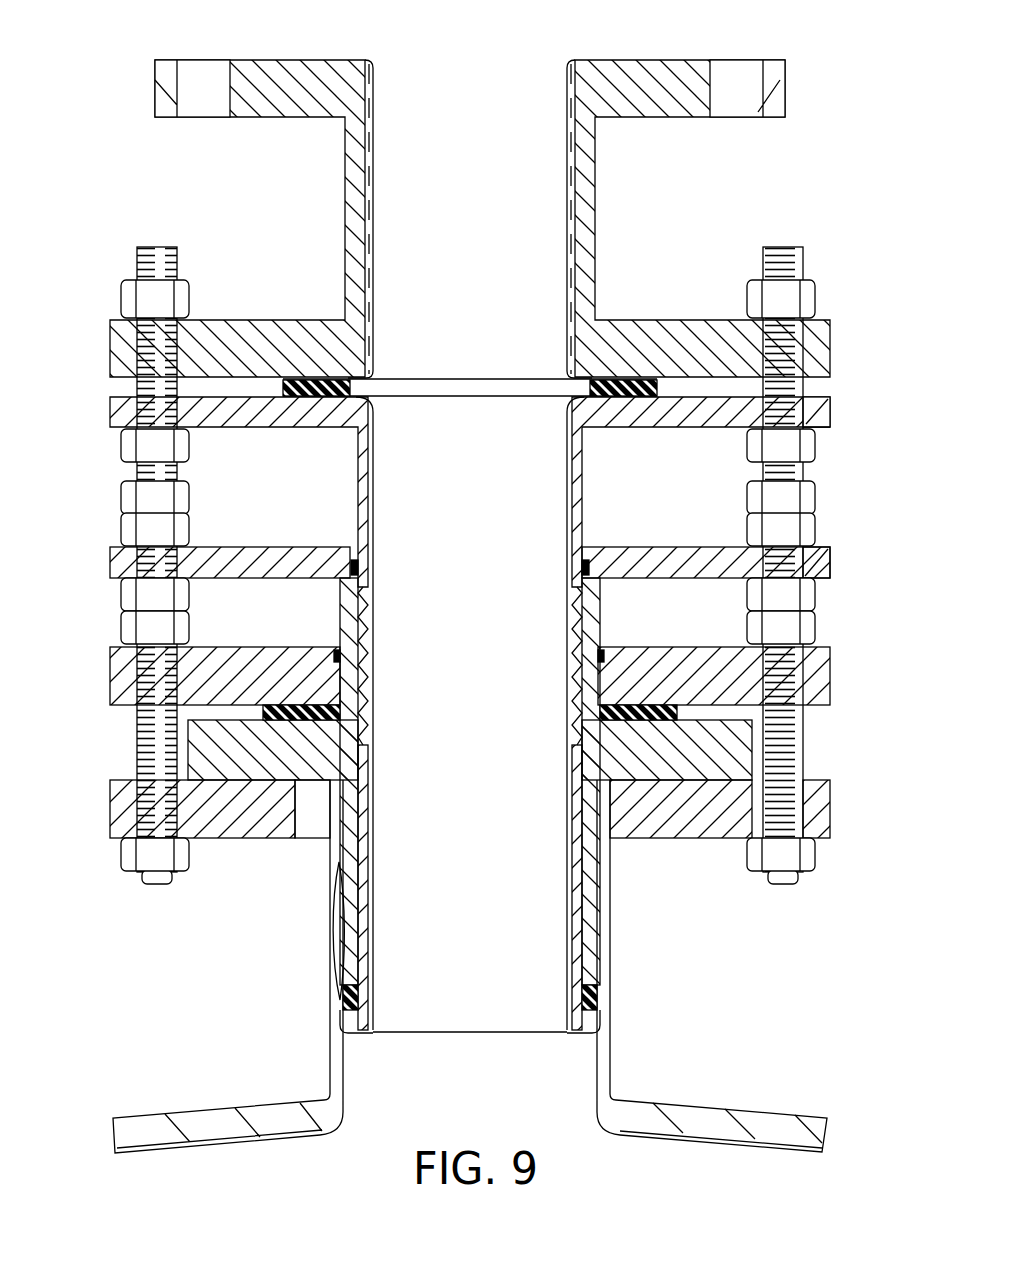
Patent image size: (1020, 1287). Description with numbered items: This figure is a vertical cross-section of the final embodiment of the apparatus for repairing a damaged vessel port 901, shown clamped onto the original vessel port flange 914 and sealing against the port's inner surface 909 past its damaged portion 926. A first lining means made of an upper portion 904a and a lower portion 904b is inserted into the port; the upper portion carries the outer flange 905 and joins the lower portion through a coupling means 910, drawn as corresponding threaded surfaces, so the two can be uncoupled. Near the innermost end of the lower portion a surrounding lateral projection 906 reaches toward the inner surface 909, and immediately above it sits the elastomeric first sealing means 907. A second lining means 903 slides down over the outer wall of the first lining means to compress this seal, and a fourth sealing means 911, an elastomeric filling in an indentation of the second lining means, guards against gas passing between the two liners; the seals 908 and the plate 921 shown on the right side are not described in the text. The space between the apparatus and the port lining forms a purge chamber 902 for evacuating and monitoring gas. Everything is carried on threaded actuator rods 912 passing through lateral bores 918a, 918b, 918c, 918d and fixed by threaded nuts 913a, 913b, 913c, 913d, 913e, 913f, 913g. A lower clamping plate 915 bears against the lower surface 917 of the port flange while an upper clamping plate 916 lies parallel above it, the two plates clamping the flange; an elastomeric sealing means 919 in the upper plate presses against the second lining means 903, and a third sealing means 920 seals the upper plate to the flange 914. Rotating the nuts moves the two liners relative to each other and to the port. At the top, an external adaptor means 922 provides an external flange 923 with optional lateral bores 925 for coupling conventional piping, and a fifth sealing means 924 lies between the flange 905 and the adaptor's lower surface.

The damaged vessel port 901 is at (330, 1062).
The purge chamber 902 is at (595, 905).
The second lining means 903 is at (348, 582).
The upper portion of the first lining means 904a is at (358, 470).
The lower portion of the first lining means 904b is at (374, 760).
The outer flange of the first lining means 905 is at (820, 428).
The surrounding lateral projection 906 is at (355, 1036).
The first sealing means 907 is at (590, 995).
The seal 908 is at (350, 980).
The inner surface of the vessel port 909 is at (605, 1095).
The coupling means 910 is at (368, 636).
The fourth sealing means 911 is at (352, 562).
The actuator rod 912 is at (175, 250).
The threaded nut 913a is at (191, 300).
The threaded nut 913b is at (191, 445).
The threaded nut 913c is at (191, 498).
The threaded nut 913d is at (191, 528).
The threaded nut 913e is at (191, 595).
The threaded nut 913f is at (191, 628).
The threaded nut 913g is at (122, 858).
The vessel port flange 914 is at (625, 782).
The lower clamping plate 915 is at (230, 838).
The upper clamping plate 916 is at (110, 690).
The lower surface of the vessel port flange 917 is at (317, 782).
The lateral bore 918a is at (805, 782).
The lateral bore 918b is at (800, 708).
The lateral bore 918c is at (812, 387).
The lateral bore 918d is at (825, 400).
The elastomeric sealing means 919 is at (335, 655).
The third sealing means 920 is at (645, 690).
The plate 921 is at (812, 548).
The external adaptor means 922 is at (592, 215).
The external flange 923 is at (590, 67).
The fifth sealing means 924 is at (615, 387).
The lateral bores 925 is at (222, 70).
The damaged portion of the port 926 is at (340, 922).